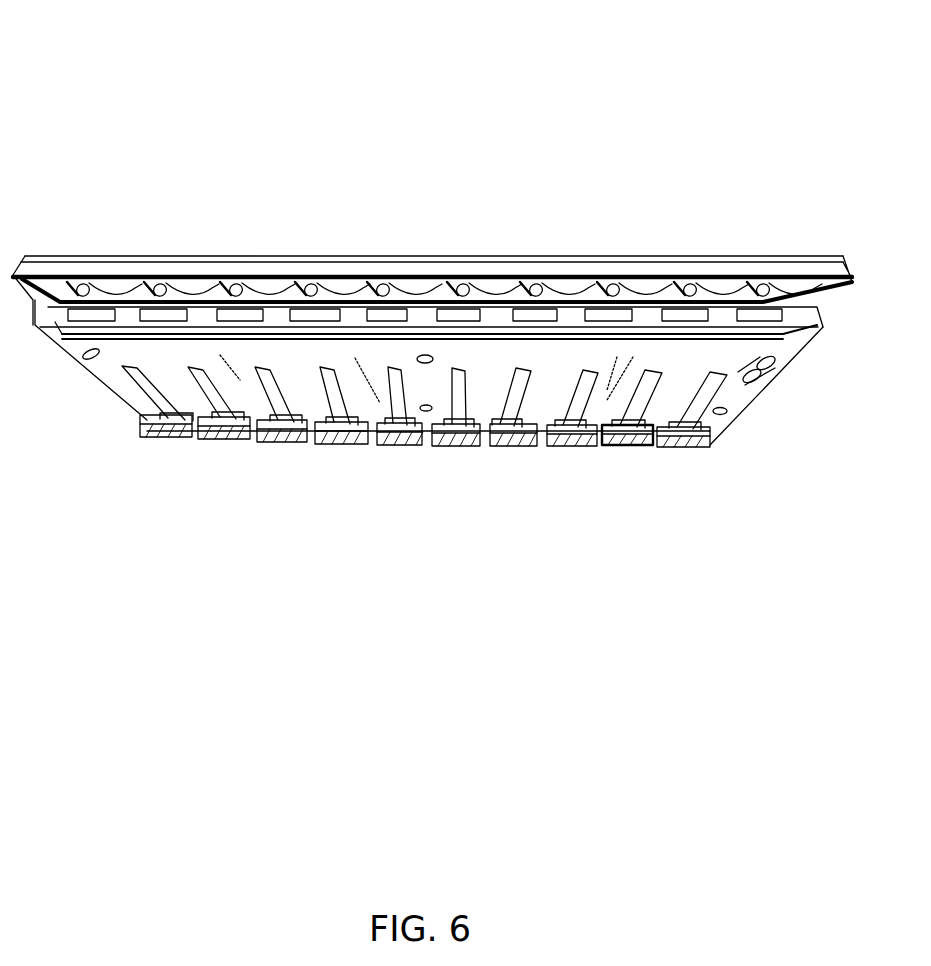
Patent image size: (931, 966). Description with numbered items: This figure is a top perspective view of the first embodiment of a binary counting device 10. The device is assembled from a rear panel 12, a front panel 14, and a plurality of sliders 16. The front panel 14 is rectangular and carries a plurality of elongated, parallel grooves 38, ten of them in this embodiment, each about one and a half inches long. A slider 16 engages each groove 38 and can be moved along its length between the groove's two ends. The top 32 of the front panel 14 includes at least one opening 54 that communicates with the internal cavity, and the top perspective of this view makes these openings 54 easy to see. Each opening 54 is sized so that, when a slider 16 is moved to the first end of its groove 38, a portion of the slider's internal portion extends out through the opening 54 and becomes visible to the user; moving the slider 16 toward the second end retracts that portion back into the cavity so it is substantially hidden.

The binary counting device 10 is at (147, 88).
The rear panel 12 is at (281, 265).
The front panel 14 is at (575, 358).
The sliders 16 is at (277, 444).
The top 32 is at (343, 293).
The grooves 38 is at (386, 447).
The opening 54 is at (475, 291).